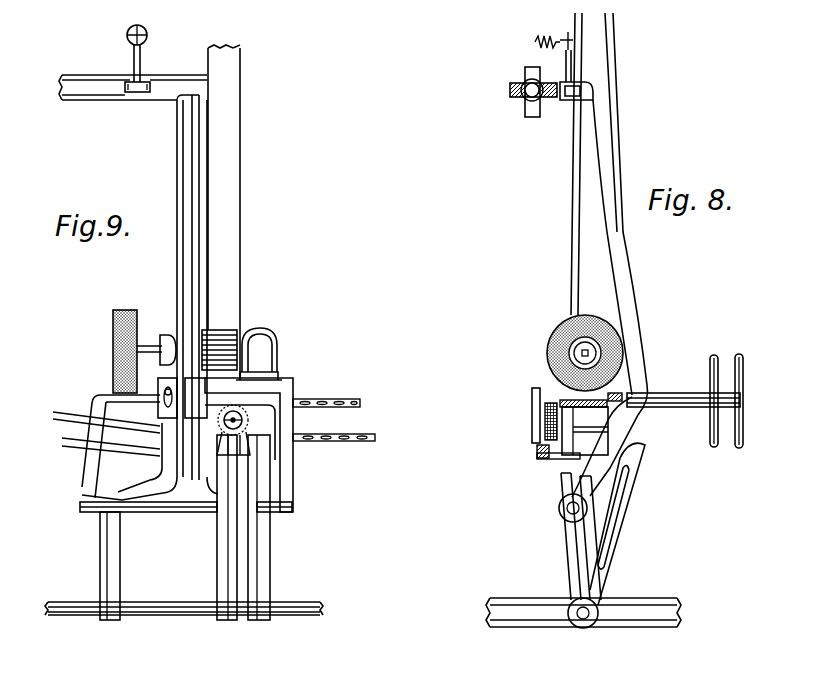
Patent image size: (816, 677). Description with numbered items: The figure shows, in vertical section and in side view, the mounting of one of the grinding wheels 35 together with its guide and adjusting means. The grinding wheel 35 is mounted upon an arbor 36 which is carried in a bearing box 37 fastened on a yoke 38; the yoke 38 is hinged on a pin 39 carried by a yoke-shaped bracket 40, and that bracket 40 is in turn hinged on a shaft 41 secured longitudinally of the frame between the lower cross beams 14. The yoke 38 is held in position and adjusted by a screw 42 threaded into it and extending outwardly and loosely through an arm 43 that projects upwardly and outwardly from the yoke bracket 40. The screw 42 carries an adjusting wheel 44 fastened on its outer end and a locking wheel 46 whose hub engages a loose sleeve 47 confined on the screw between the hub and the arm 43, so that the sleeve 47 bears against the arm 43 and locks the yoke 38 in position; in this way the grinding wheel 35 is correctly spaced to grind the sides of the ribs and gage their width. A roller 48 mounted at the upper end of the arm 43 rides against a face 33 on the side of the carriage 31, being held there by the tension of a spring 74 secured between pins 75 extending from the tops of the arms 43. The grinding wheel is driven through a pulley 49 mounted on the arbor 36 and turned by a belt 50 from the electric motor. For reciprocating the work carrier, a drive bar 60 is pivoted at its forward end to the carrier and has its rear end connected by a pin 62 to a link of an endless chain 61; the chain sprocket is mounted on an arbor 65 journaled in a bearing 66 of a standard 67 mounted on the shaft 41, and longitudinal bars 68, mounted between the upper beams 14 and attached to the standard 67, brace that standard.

In FIG. 8, the cross beams 14 is at (680, 612).
In FIG. 9, the carriages 31 is at (76, 73).
In FIG. 8, the carriages 31 is at (528, 67).
In FIG. 8, the faces 33 is at (510, 90).
In FIG. 9, the grinding wheels 35 is at (113, 317).
In FIG. 8, the grinding wheels 35 is at (547, 340).
In FIG. 9, the arbor 36 is at (148, 345).
In FIG. 9, the bearing box 37 is at (283, 327).
In FIG. 9, the yoke 38 is at (282, 393).
In FIG. 8, the yoke 38 is at (560, 403).
In FIG. 9, the pin 39 is at (200, 505).
In FIG. 8, the pin 39 is at (570, 522).
In FIG. 9, the yoke-shaped bracket 40 is at (160, 487).
In FIG. 8, the yoke-shaped bracket 40 is at (565, 500).
In FIG. 9, the shaft 41 is at (70, 617).
In FIG. 8, the shaft 41 is at (607, 594).
In FIG. 9, the screws 42 is at (168, 410).
In FIG. 8, the screws 42 is at (615, 393).
In FIG. 9, the arm 43 is at (188, 288).
In FIG. 8, the arm 43 is at (630, 283).
In FIG. 8, the adjusting wheel 44 is at (743, 370).
In FIG. 8, the locking wheel 46 is at (714, 355).
In FIG. 8, the loose sleeve 47 is at (680, 407).
In FIG. 9, the rollers 48 is at (140, 87).
In FIG. 8, the rollers 48 is at (568, 100).
In FIG. 9, the pulley 49 is at (237, 330).
In FIG. 9, the belt 50 is at (222, 190).
In FIG. 9, the drive bars 60 is at (60, 425).
In FIG. 8, the drive bars 60 is at (532, 412).
In FIG. 9, the endless chain 61 is at (340, 399).
In FIG. 8, the endless chain 61 is at (545, 425).
In FIG. 8, the pin 62 is at (537, 450).
In FIG. 9, the arbor 65 is at (243, 420).
In FIG. 8, the arbor 65 is at (568, 455).
In FIG. 9, the bearing 66 is at (243, 440).
In FIG. 8, the bearing 66 is at (592, 430).
In FIG. 9, the standard 67 is at (217, 578).
In FIG. 8, the standard 67 is at (617, 522).
In FIG. 9, the longitudinal bars 68 is at (352, 462).
In FIG. 8, the longitudinal bars 68 is at (548, 459).
In FIG. 9, the spring 74 is at (127, 36).
In FIG. 8, the spring 74 is at (535, 28).
In FIG. 9, the pins 75 is at (134, 58).
In FIG. 8, the pins 75 is at (568, 62).